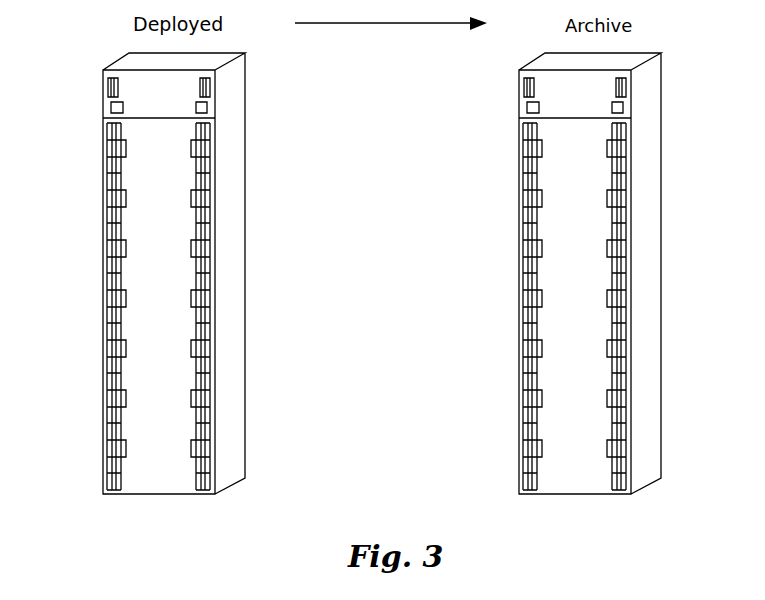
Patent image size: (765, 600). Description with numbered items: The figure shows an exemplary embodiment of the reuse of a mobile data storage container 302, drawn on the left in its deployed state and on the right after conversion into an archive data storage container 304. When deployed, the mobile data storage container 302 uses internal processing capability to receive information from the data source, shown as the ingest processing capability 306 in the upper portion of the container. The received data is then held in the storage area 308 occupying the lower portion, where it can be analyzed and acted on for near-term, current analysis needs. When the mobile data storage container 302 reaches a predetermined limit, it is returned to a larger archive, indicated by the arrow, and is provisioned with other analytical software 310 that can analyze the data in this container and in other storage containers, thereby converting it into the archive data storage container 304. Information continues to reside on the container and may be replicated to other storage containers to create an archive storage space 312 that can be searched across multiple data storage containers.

The mobile data storage container 302 is at (103, 298).
The archive data storage container 304 is at (660, 292).
The ingest processing capability 306 is at (261, 122).
The storage area 308 is at (261, 223).
The analytical software 310 is at (513, 122).
The archive storage space 312 is at (513, 223).